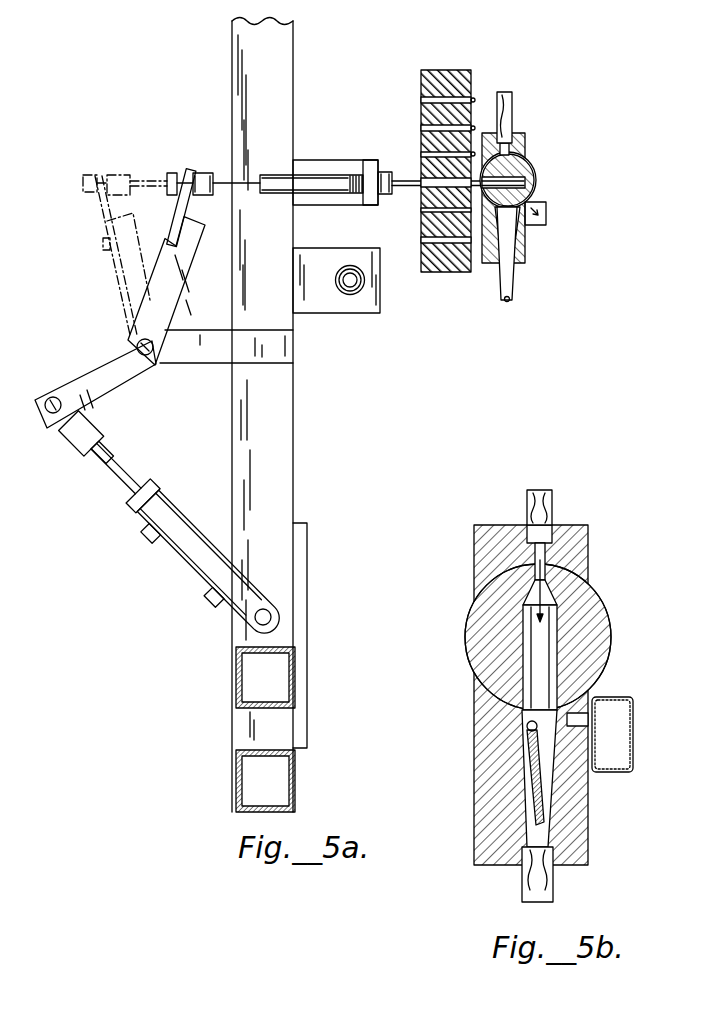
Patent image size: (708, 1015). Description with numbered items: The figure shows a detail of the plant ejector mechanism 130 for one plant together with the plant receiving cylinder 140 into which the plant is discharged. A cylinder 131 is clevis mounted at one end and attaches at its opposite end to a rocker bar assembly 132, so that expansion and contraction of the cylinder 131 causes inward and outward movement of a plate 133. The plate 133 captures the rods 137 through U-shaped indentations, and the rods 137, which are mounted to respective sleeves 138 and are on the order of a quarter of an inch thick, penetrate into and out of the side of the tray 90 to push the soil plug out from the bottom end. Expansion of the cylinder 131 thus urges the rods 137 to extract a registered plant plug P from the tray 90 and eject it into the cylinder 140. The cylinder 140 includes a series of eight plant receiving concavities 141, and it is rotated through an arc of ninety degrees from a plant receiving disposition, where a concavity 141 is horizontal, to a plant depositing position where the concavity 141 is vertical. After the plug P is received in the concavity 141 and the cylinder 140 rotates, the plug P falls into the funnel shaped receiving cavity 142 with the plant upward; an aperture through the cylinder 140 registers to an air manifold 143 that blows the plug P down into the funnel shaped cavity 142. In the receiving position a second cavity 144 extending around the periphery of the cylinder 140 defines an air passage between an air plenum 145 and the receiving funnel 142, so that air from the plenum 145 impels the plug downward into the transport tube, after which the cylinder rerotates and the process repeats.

In FIG. 5A, the tray 90 is at (421, 104).
In FIG. 5A, the actuating assembly 130 is at (92, 211).
In FIG. 5A, the cylinder 131 is at (200, 556).
In FIG. 5A, the rocker bar assembly 132 is at (167, 323).
In FIG. 5A, the plate 133 is at (103, 240).
In FIG. 5A, the rods 137 is at (407, 180).
In FIG. 5A, the sleeves 138 is at (297, 172).
In FIG. 5A, the cylinder 140 is at (536, 178).
In FIG. 5A, the plant receiving concavity 141 is at (524, 160).
In FIG. 5B, the plant receiving concavity 141 is at (523, 646).
In FIG. 5A, the funnel shaped receiving cavity 142 is at (510, 241).
In FIG. 5B, the funnel shaped receiving cavity 142 is at (522, 775).
In FIG. 5B, the air manifold 143 is at (553, 502).
In FIG. 5A, the second cavity 144 is at (531, 193).
In FIG. 5A, the air plenum 145 is at (547, 209).
In FIG. 5A, the plant plug P is at (531, 170).
In FIG. 5B, the plant plug P is at (545, 790).